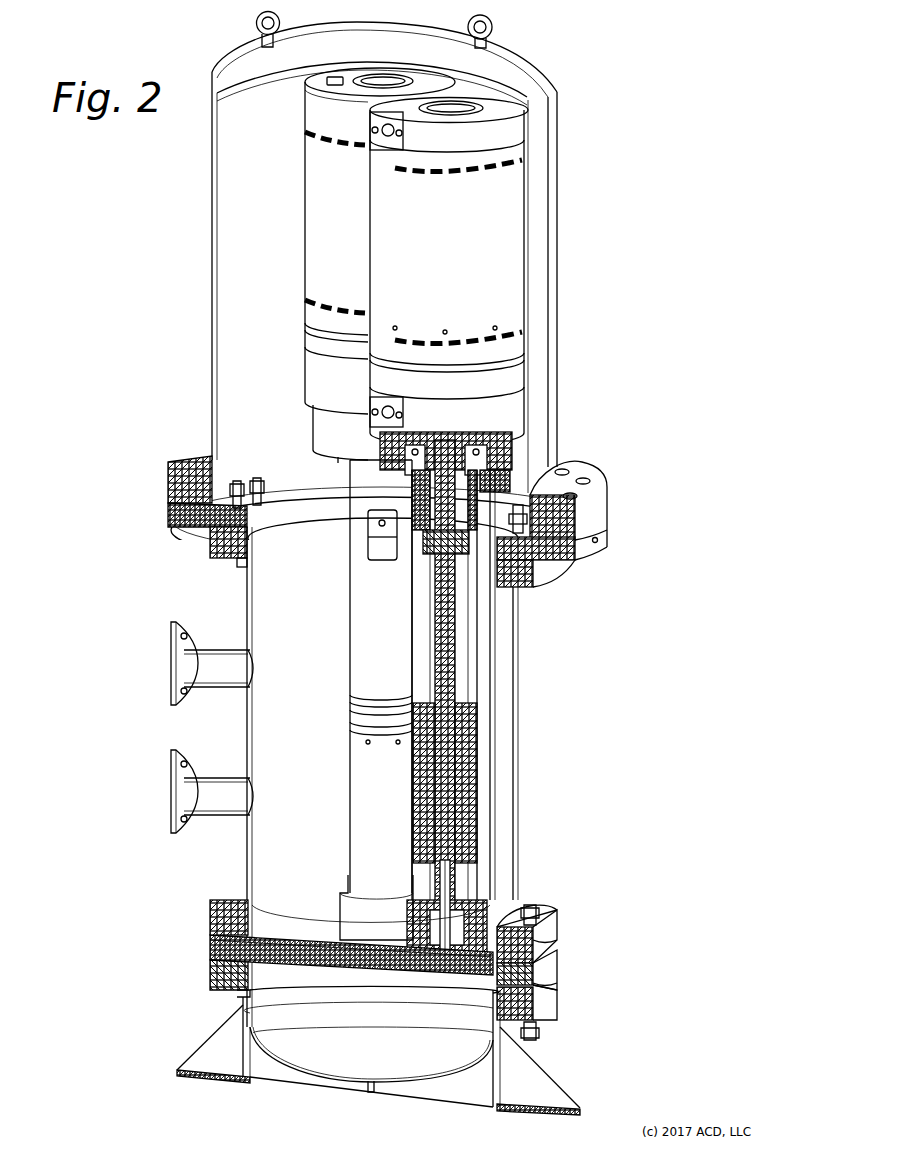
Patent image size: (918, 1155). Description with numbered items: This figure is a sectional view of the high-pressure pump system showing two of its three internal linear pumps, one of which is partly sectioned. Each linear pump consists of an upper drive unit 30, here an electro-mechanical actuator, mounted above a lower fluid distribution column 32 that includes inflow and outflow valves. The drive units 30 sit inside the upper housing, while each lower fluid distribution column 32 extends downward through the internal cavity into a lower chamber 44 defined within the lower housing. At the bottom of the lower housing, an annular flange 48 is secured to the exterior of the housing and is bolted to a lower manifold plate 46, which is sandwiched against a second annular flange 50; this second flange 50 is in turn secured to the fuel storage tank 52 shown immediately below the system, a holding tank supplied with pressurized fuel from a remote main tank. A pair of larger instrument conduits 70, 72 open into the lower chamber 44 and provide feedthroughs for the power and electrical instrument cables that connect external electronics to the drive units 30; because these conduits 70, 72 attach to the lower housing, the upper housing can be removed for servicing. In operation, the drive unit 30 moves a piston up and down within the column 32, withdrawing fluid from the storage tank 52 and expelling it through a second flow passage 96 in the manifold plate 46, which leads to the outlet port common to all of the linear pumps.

The upper drive unit 30 is at (388, 262).
The lower fluid distribution column 32 is at (413, 762).
The lower chamber 44 is at (276, 621).
The lower manifold plate 46 is at (555, 967).
The annular flange 48 is at (560, 925).
The second annular flange 50 is at (555, 1003).
The fuel storage tank 52 is at (243, 1057).
The instrument conduit 70 is at (200, 668).
The instrument conduit 72 is at (200, 795).
The second flow passage 96 is at (210, 950).